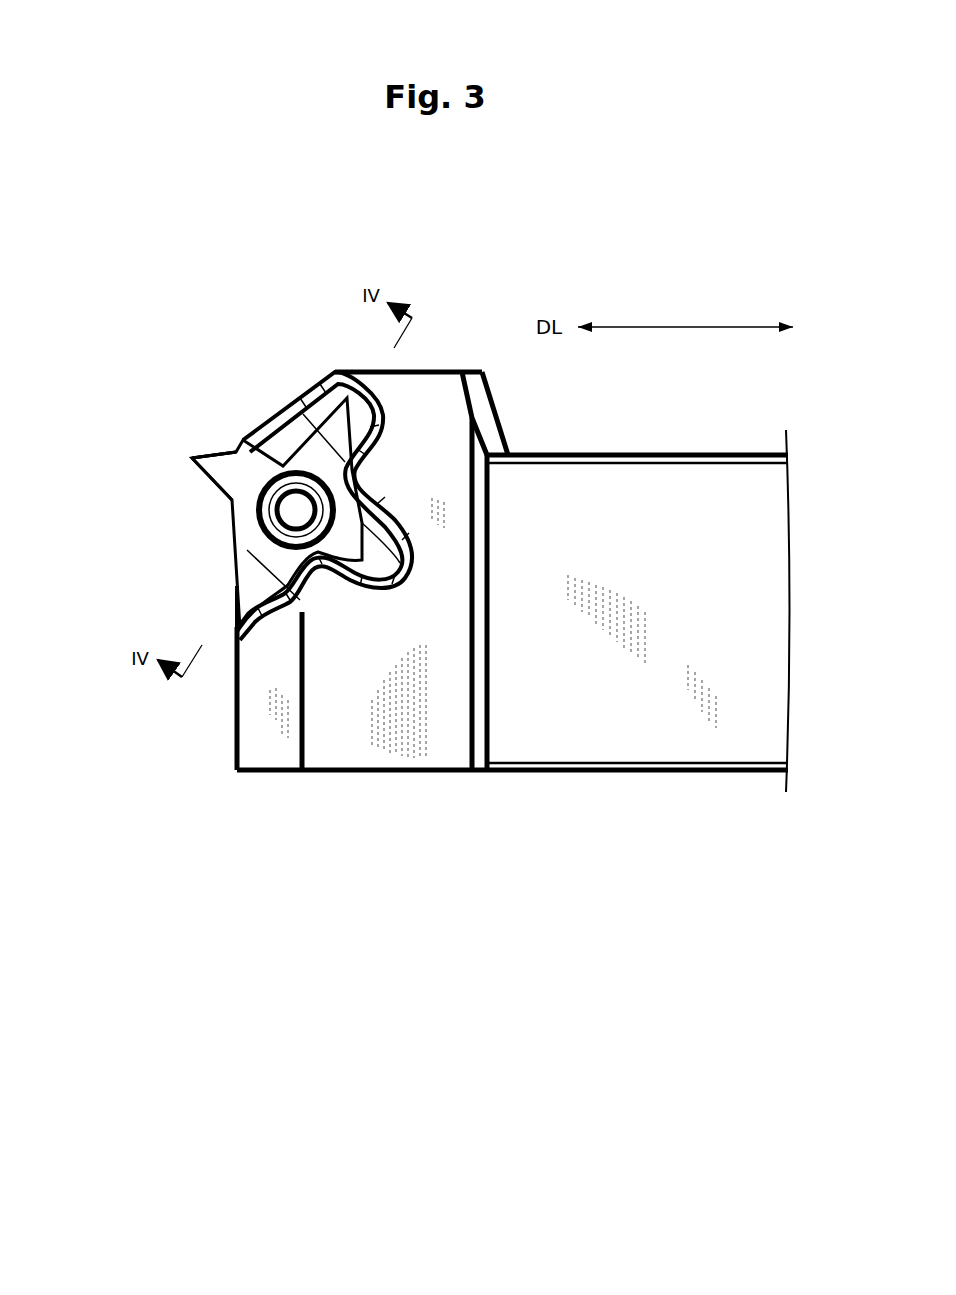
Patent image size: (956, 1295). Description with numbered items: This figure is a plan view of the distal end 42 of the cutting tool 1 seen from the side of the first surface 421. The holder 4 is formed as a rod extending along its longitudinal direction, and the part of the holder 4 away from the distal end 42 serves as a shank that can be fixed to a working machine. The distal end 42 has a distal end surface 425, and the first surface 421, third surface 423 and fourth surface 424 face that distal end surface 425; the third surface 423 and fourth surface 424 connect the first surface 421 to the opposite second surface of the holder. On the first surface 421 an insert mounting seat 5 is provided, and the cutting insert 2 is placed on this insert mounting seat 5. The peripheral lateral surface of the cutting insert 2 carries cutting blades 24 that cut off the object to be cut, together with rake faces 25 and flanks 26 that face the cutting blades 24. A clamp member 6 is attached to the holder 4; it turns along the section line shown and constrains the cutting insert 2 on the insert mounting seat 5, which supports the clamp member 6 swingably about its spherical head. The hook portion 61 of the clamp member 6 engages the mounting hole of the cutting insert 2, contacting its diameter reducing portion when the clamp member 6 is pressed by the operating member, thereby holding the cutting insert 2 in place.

The cutting tool 1 is at (440, 1104).
The cutting insert 2 is at (205, 492).
The holder 4 is at (712, 778).
The insert mounting seat 5 is at (233, 587).
The clamp member 6 is at (294, 505).
The cutting blades 24 is at (345, 400).
The rake faces 25 is at (202, 455).
The flanks 26 is at (190, 460).
The distal end 42 is at (368, 778).
The hook portion 61 is at (290, 514).
The first surface 421 is at (362, 716).
The third surface 423 is at (438, 372).
The fourth surface 424 is at (430, 778).
The distal end surface 425 is at (237, 715).